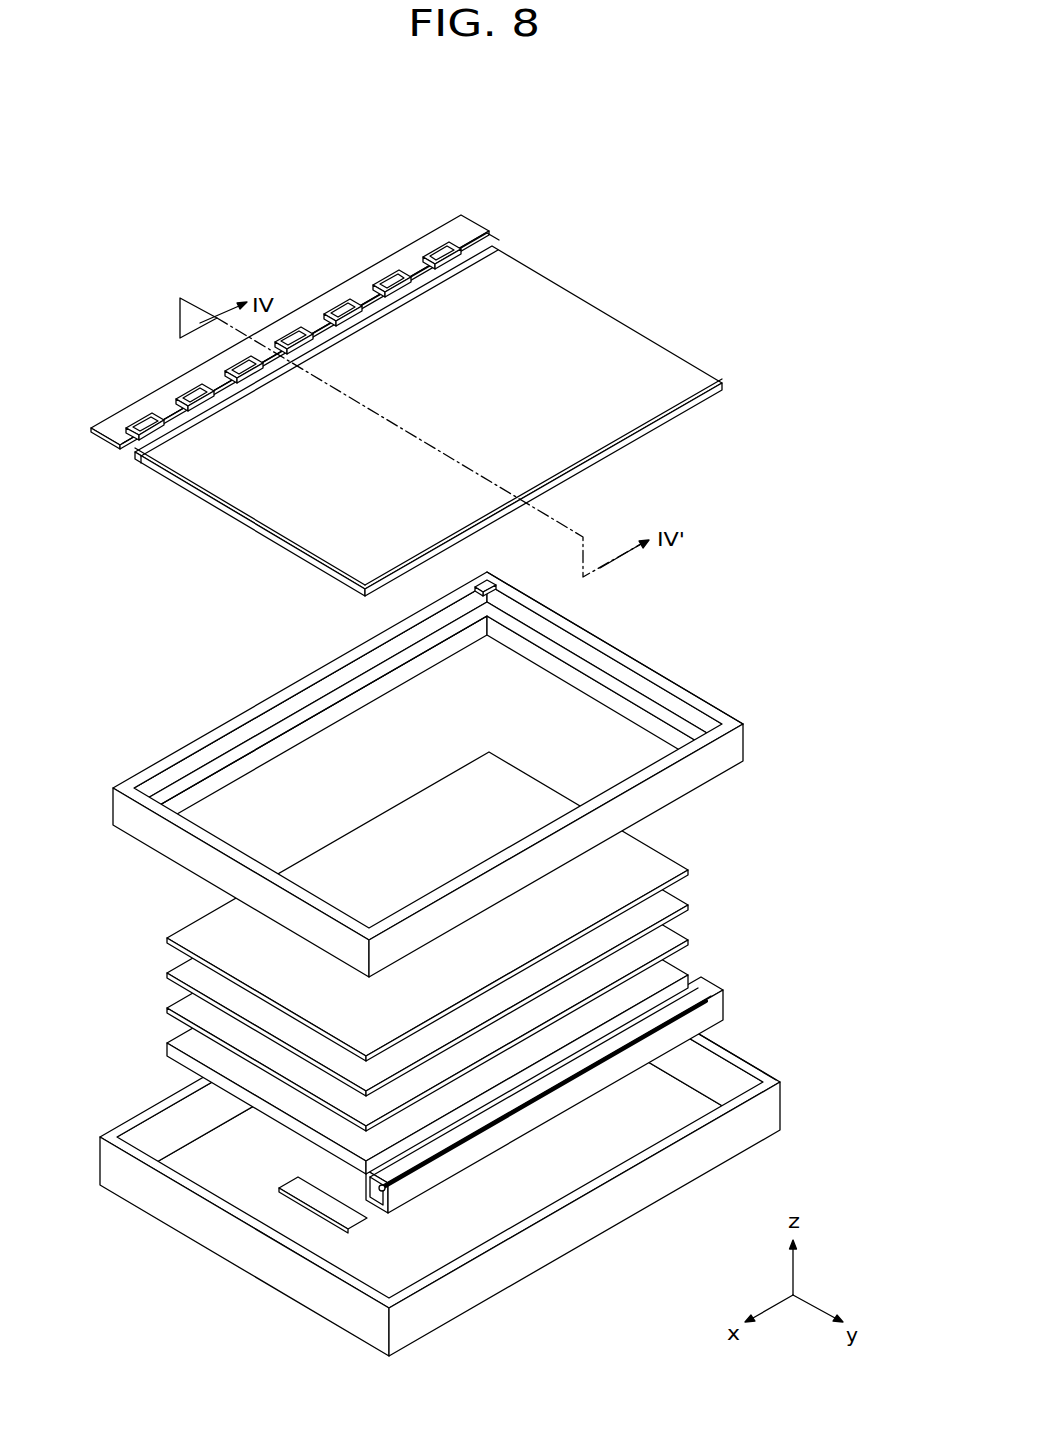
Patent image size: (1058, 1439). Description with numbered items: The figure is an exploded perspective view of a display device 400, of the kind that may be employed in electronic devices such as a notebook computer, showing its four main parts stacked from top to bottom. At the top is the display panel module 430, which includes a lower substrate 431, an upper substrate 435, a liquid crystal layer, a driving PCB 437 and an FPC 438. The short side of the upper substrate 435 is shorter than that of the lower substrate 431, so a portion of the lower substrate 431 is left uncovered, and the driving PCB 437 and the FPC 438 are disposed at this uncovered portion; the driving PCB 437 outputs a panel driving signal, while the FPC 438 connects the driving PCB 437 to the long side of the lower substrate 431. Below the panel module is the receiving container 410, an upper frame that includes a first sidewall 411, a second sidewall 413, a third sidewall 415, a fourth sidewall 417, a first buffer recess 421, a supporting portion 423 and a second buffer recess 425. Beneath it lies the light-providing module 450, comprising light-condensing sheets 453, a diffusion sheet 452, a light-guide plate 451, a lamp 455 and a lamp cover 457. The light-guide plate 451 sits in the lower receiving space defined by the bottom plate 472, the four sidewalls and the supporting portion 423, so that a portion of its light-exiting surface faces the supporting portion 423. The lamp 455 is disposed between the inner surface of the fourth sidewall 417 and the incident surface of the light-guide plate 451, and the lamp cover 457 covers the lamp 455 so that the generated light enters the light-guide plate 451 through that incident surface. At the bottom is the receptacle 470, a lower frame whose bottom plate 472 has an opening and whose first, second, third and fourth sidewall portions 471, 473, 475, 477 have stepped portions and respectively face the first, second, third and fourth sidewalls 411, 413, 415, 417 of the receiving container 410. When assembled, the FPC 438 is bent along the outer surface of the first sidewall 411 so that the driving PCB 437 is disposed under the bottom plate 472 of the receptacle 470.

The display device 400 is at (455, 92).
The display panel module 430 is at (406, 367).
The upper substrate 435 is at (522, 273).
The lower substrate 431 is at (487, 247).
The driving PCB 437 is at (445, 233).
The FPC 438 is at (331, 311).
The receiving container 410 is at (409, 752).
The first sidewall 411 is at (300, 680).
The second sidewall 413 is at (204, 862).
The third sidewall 415 is at (660, 667).
The fourth sidewall 417 is at (525, 872).
The first buffer recess 421 is at (494, 573).
The supporting portion 423 is at (555, 643).
The second buffer recess 425 is at (502, 592).
The light-providing module 450 is at (508, 1046).
The light-condensing sheets 453 is at (800, 1022).
The diffusion sheet 452 is at (675, 902).
The light-guide plate 451 is at (675, 938).
The lamp cover 457 is at (513, 1158).
The lamp 455 is at (393, 1192).
The receptacle 470 is at (490, 1133).
The first sidewall portion 471 is at (148, 1110).
The bottom plate 472 is at (585, 1153).
The second sidewall portion 473 is at (217, 1230).
The third sidewall portion 475 is at (732, 1056).
The fourth sidewall portion 477 is at (577, 1223).